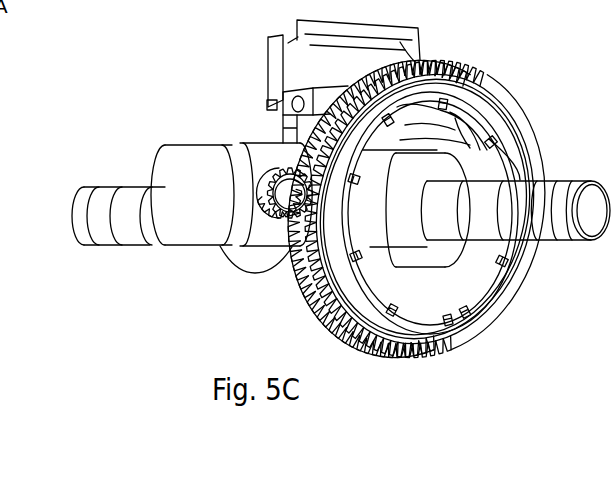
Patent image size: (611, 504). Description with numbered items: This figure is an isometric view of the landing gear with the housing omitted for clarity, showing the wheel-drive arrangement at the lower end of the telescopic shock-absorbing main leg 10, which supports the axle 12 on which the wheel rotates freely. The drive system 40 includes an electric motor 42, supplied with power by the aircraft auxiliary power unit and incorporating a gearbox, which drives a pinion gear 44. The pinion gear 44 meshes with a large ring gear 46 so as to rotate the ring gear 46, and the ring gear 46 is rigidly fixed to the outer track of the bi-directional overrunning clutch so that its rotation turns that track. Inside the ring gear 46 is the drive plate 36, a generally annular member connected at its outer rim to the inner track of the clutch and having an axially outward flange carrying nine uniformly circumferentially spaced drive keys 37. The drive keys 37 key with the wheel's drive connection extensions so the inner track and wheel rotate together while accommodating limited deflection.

The main leg 10 is at (403, 40).
The axle 12 is at (105, 225).
The drive plate 36 is at (470, 99).
The drive keys 37 is at (500, 135).
The drive system 40 is at (232, 98).
The electric motor 42 is at (193, 210).
The pinion gear 44 is at (267, 213).
The ring gear 46 is at (417, 360).